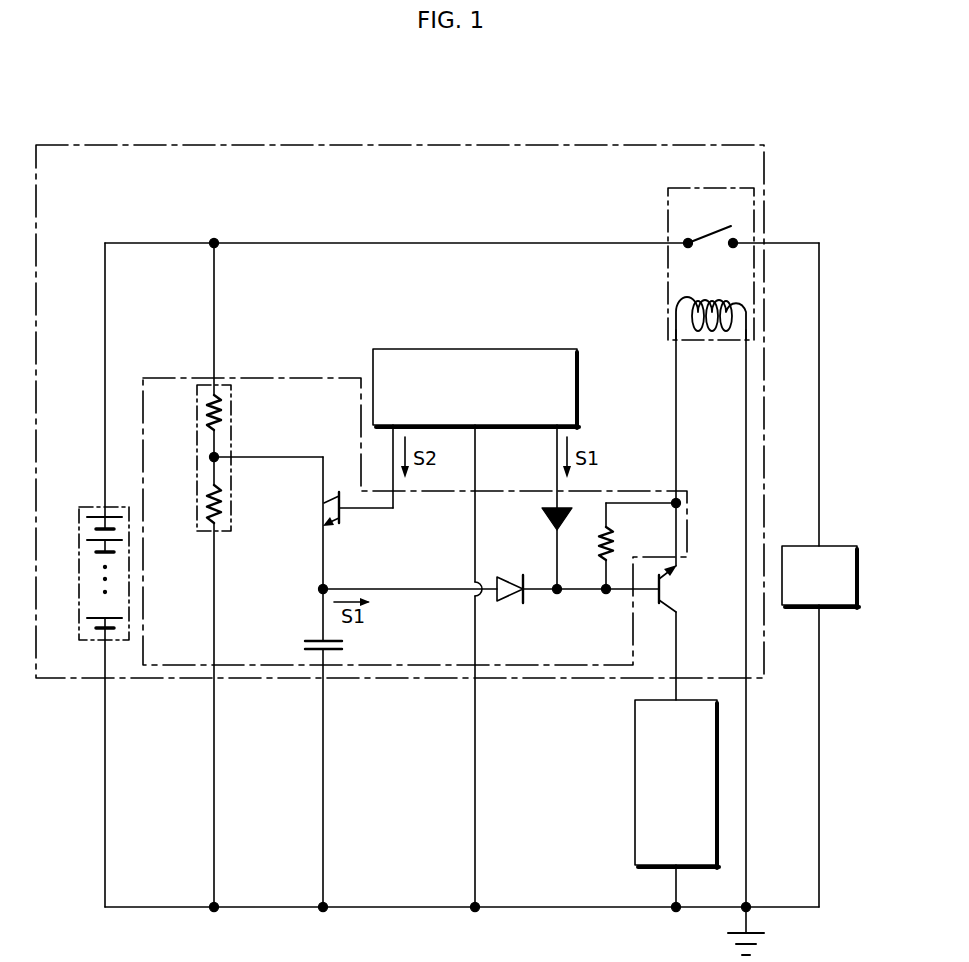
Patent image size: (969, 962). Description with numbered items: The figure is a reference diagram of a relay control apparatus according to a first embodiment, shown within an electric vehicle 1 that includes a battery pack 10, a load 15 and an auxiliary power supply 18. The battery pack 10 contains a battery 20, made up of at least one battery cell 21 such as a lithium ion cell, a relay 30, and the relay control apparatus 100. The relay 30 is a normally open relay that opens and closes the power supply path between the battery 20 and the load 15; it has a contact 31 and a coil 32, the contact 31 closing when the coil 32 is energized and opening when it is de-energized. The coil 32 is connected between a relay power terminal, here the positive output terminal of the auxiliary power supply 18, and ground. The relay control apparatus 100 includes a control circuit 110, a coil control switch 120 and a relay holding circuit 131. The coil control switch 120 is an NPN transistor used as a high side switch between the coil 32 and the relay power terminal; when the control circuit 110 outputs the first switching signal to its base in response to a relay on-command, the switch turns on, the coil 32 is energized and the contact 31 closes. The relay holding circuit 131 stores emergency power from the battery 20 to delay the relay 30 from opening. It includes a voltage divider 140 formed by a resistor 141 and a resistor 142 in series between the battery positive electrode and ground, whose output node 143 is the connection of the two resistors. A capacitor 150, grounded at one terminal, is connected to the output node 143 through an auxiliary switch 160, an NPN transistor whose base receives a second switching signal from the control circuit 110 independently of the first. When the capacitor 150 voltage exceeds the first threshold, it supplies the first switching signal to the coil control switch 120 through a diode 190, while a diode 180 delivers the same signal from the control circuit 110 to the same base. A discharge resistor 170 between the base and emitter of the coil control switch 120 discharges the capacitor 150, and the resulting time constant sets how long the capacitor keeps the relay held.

The electric vehicle 1 is at (176, 91).
The battery pack 10 is at (250, 145).
The load 15 is at (842, 546).
The auxiliary power supply 18 is at (635, 743).
The battery 20 is at (88, 507).
The battery cell 21 is at (87, 518).
The relay 30 is at (732, 188).
The contact 31 is at (707, 233).
The coil 32 is at (715, 296).
The relay control apparatus 100 is at (522, 290).
The control circuit 110 is at (550, 349).
The coil control switch 120 is at (668, 592).
The relay holding circuit 131 is at (300, 378).
The voltage divider 140 is at (231, 412).
The resistor 141 is at (206, 403).
The resistor 142 is at (206, 494).
The output node 143 is at (210, 458).
The capacitor 150 is at (305, 645).
The auxiliary switch 160 is at (328, 507).
The discharge resistor 170 is at (614, 537).
The diode 180 is at (544, 520).
The diode 190 is at (509, 576).